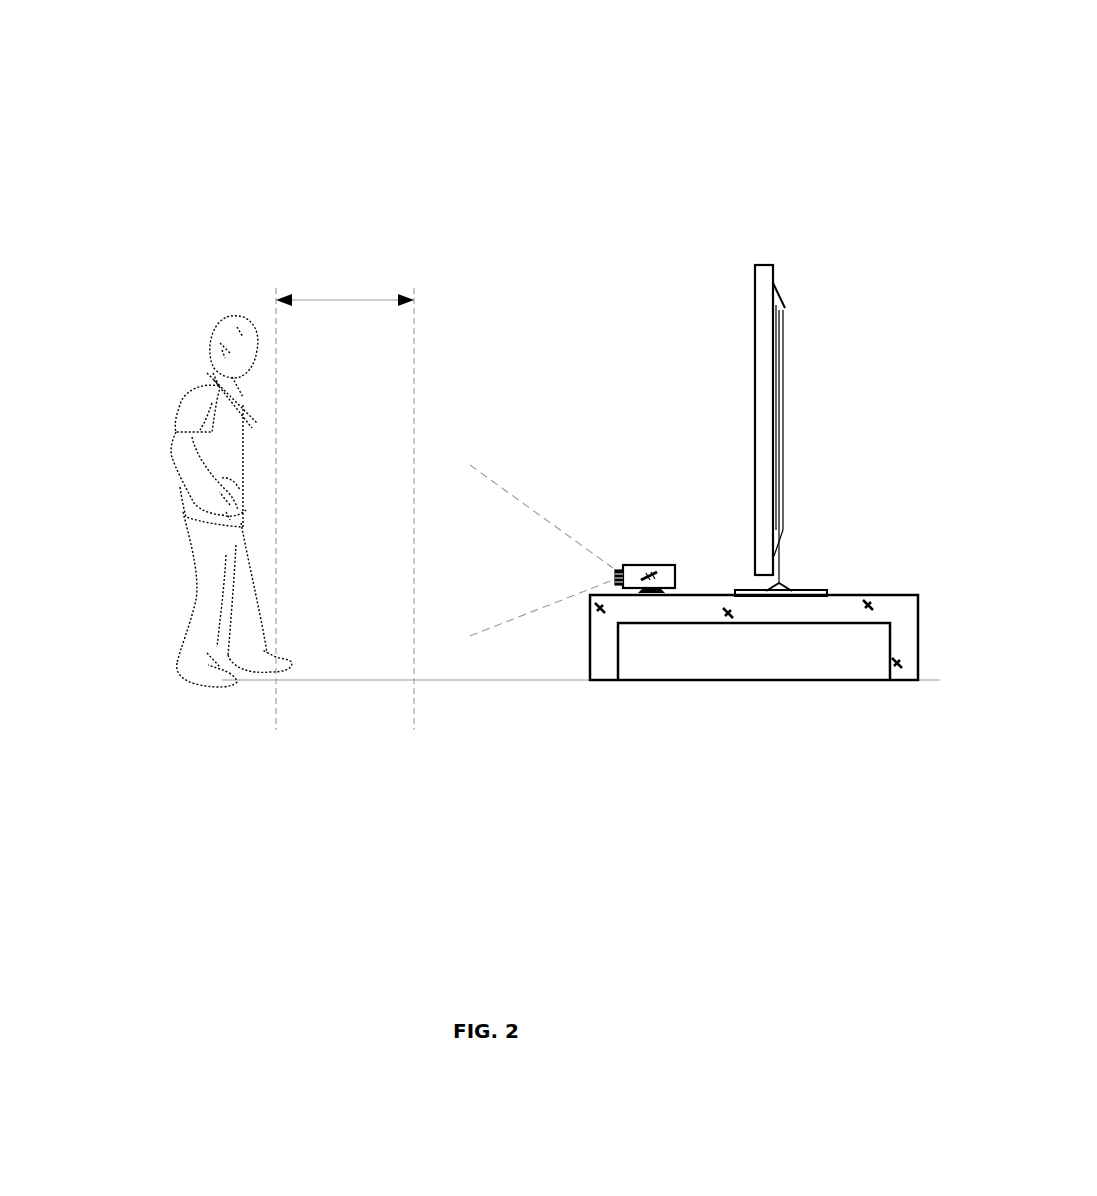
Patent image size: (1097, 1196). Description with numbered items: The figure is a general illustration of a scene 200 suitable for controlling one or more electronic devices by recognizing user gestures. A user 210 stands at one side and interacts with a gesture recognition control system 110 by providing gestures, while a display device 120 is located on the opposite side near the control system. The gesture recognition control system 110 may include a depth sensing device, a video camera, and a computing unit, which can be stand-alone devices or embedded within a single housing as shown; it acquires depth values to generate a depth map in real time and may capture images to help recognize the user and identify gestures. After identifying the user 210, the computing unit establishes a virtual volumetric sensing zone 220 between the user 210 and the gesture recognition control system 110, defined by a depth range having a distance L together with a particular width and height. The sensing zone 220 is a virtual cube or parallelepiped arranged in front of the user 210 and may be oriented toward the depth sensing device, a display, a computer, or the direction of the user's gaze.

The scene 200 is at (781, 60).
The gesture recognition control system 110 is at (646, 558).
The display device 120 is at (796, 325).
The user 210 is at (138, 387).
The virtual volumetric sensing zone 220 is at (414, 743).